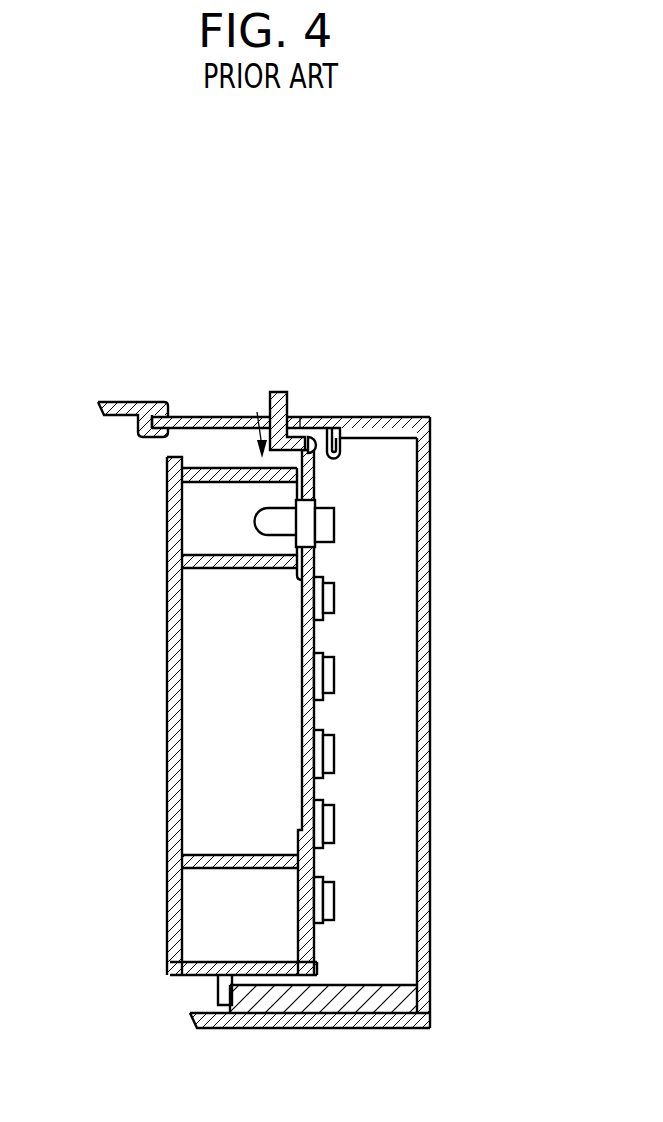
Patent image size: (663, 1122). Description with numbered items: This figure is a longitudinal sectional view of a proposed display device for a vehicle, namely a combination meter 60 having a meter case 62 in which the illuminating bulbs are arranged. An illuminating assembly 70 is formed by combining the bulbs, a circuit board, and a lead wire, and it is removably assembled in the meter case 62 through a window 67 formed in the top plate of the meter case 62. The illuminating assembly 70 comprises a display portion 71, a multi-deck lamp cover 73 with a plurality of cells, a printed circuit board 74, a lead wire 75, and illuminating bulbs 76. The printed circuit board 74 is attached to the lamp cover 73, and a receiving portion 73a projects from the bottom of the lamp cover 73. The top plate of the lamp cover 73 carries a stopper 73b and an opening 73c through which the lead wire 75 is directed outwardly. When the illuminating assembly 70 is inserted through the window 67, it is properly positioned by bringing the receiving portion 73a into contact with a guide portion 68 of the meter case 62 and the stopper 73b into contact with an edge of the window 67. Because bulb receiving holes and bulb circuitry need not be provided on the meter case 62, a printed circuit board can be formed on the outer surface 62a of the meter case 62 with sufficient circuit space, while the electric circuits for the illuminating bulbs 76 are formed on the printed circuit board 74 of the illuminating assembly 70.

The combination meter 60 is at (380, 762).
The meter case 62 is at (128, 402).
The outer surface of the meter case 62a is at (425, 788).
The window 67 is at (257, 412).
The guide portion 68 is at (323, 1012).
The illuminating assembly 70 is at (177, 736).
The display portion 71 is at (167, 786).
The lamp cover 73 is at (205, 415).
The receiving portion 73a is at (216, 993).
The stopper 73b is at (343, 450).
The opening 73c is at (293, 413).
The printed circuit board 74 is at (316, 640).
The lead wire 75 is at (290, 400).
The illuminating bulbs 76 is at (336, 525).